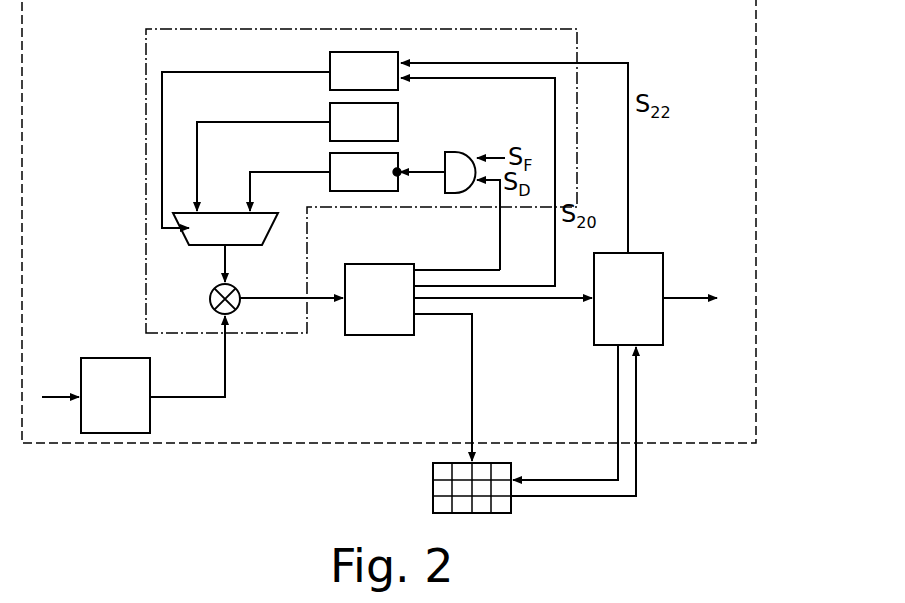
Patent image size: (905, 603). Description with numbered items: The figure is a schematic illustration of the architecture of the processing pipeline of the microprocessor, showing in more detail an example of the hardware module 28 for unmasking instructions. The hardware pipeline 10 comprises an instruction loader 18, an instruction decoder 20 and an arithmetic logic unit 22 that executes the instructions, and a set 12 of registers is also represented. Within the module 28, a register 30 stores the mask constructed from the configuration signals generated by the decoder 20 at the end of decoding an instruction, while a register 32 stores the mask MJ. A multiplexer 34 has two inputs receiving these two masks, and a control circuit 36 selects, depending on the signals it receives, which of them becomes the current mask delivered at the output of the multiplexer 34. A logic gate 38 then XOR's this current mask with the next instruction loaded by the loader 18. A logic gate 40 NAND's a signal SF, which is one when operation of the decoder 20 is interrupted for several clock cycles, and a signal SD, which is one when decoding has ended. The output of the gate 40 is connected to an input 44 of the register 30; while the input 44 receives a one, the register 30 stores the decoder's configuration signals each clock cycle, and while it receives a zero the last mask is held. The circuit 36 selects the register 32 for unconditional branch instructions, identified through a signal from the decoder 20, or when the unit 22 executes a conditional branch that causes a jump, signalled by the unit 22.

The hardware pipeline 10 is at (760, 16).
The set of registers 12 is at (430, 488).
The instruction loader 18 is at (133, 374).
The instruction decoder 20 is at (468, 269).
The arithmetic logic unit 22 is at (559, 271).
The hardware module 28 is at (146, 48).
The register 30 is at (324, 182).
The register 32 is at (297, 157).
The multiplexer 34 is at (225, 247).
The control circuit 36 is at (280, 140).
The logic gate 38 is at (212, 291).
The logic gate 40 is at (460, 162).
The input 44 is at (399, 170).